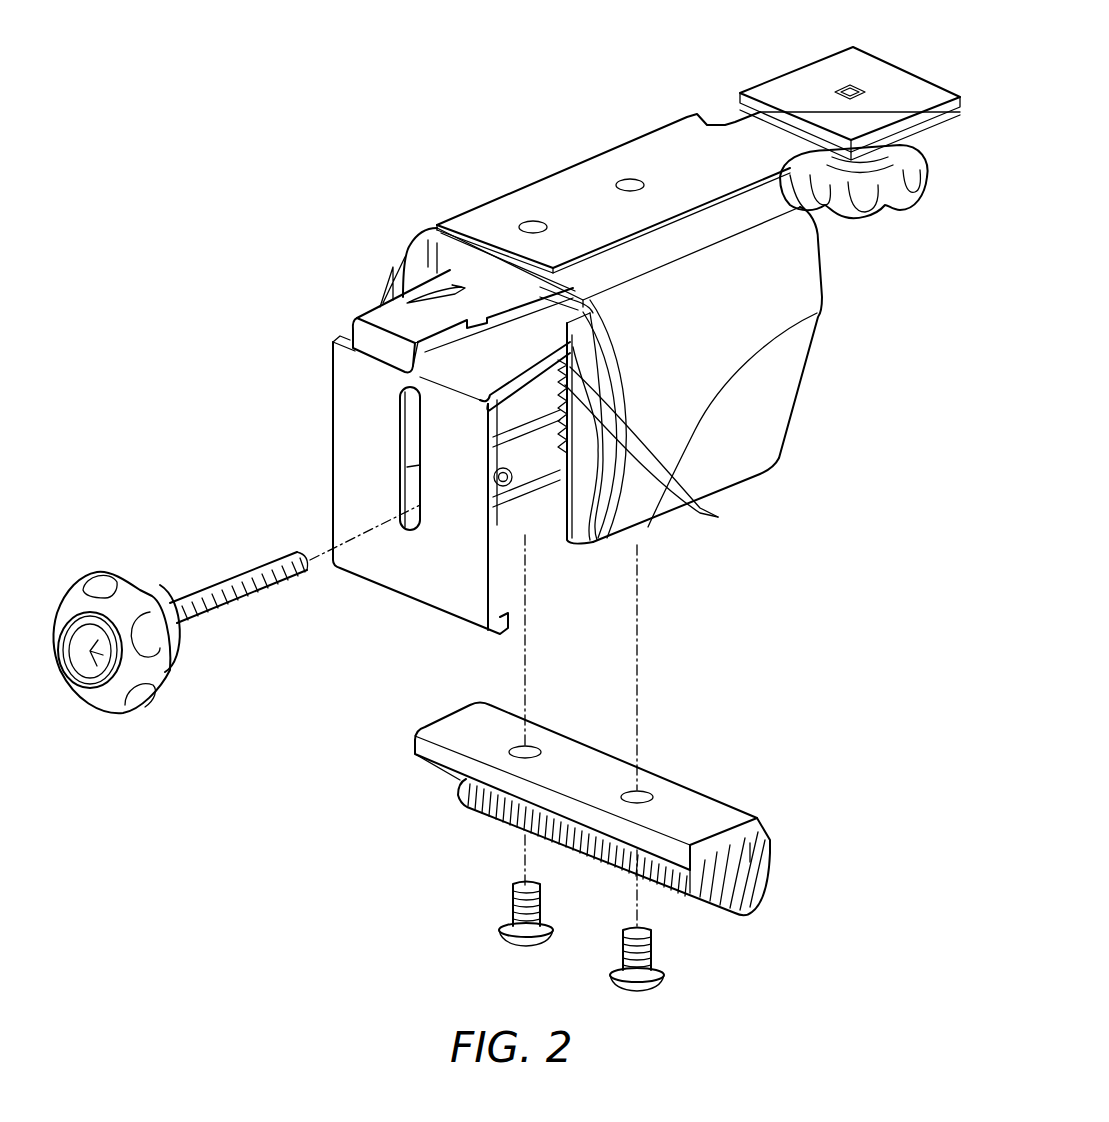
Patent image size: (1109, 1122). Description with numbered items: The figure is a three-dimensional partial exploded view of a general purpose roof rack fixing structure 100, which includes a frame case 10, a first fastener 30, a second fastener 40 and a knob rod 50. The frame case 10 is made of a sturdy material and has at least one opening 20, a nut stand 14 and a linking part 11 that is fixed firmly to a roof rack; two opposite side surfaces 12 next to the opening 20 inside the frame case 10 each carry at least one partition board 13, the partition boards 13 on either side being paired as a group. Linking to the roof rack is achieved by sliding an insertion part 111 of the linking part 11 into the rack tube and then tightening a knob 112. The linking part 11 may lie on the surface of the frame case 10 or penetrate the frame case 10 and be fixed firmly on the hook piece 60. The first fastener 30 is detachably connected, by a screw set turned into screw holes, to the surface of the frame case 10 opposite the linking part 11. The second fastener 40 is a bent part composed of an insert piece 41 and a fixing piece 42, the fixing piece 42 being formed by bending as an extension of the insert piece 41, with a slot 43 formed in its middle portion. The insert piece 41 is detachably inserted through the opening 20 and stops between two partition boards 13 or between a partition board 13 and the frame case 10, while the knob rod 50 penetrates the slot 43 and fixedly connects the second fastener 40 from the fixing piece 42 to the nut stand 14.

The roof rack fixing structure 100 is at (88, 53).
The frame case 10 is at (790, 373).
The linking part 11 is at (655, 138).
The insertion part 111 is at (800, 78).
The knob 112 is at (900, 192).
The side surfaces 12 is at (490, 283).
The partition board 13 is at (650, 505).
The nut stand 14 is at (505, 488).
The opening 20 is at (380, 305).
The first fastener 30 is at (768, 866).
The second fastener 40 is at (335, 340).
The insert piece 41 is at (477, 358).
The fixing piece 42 is at (352, 450).
The slot 43 is at (400, 498).
The knob rod 50 is at (75, 592).
The hook piece 60 is at (373, 347).